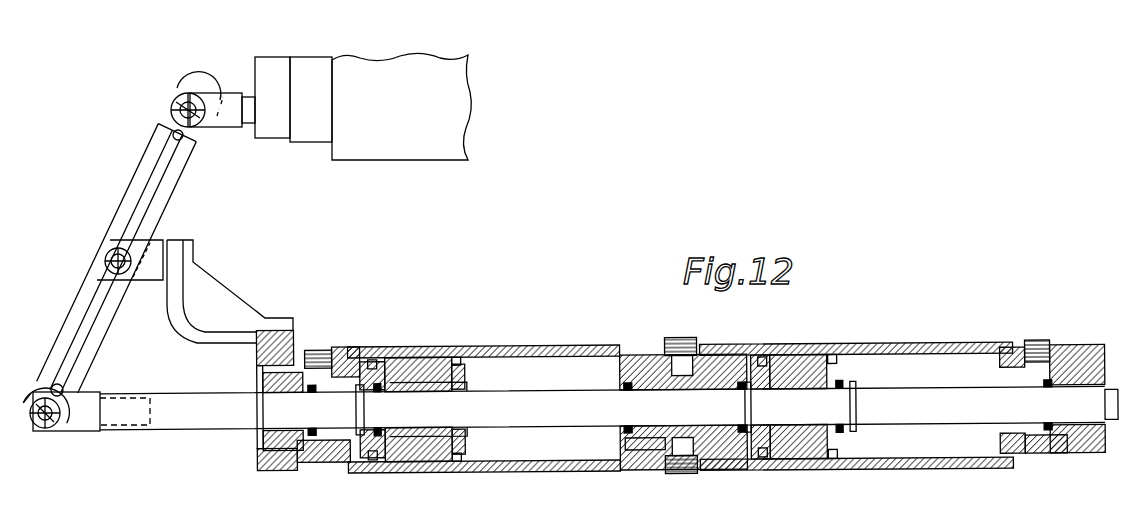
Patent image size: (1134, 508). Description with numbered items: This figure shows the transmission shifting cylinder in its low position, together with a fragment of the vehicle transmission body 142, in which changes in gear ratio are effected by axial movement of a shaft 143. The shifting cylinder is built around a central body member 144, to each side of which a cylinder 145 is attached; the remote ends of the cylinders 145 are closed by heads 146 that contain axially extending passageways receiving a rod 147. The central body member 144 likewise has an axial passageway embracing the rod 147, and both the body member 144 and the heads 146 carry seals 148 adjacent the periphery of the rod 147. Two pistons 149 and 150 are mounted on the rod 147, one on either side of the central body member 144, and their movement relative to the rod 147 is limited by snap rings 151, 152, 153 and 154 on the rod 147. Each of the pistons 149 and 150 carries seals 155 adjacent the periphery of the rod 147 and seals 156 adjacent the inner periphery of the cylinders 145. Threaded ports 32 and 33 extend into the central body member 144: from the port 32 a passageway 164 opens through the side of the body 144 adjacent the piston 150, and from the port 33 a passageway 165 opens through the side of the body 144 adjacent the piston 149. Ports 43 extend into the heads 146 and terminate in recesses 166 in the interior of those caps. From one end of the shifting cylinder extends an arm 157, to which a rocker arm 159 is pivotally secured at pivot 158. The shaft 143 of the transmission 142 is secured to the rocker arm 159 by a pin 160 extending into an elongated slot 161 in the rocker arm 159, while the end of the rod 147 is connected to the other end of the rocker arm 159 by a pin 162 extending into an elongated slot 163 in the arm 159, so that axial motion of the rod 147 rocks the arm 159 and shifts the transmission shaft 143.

The threaded port 32 is at (683, 342).
The threaded port 33 is at (698, 478).
The port 43 is at (318, 348).
The transmission body 142 is at (363, 106).
The shaft 143 is at (231, 126).
The central body member 144 is at (628, 356).
The cylinder 145 is at (508, 347).
The head 146 is at (1060, 350).
The rod 147 is at (950, 410).
The seal 148 is at (312, 392).
The piston 149 is at (408, 358).
The piston 150 is at (804, 358).
The snap ring 151 is at (356, 410).
The snap ring 152 is at (466, 411).
The snap ring 153 is at (751, 411).
The snap ring 154 is at (856, 411).
The seal 155 is at (378, 392).
The seal 156 is at (372, 358).
The arm 157 is at (176, 266).
The pivot 158 is at (110, 255).
The rocker arm 159 is at (128, 183).
The pin 160 is at (181, 97).
The elongated slot 161 is at (194, 88).
The pin 162 is at (60, 431).
The elongated slot 163 is at (44, 440).
The passageway 164 is at (728, 358).
The passageway 165 is at (643, 455).
The recess 166 is at (332, 438).